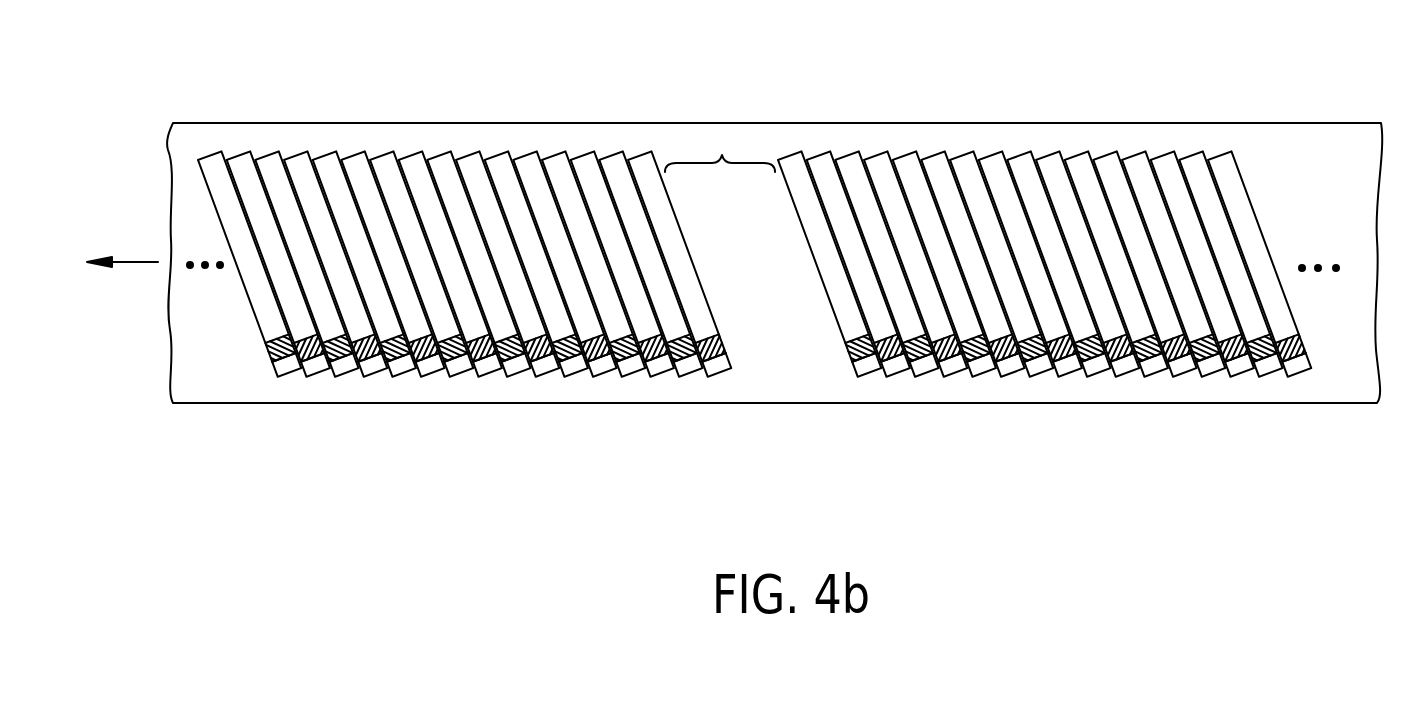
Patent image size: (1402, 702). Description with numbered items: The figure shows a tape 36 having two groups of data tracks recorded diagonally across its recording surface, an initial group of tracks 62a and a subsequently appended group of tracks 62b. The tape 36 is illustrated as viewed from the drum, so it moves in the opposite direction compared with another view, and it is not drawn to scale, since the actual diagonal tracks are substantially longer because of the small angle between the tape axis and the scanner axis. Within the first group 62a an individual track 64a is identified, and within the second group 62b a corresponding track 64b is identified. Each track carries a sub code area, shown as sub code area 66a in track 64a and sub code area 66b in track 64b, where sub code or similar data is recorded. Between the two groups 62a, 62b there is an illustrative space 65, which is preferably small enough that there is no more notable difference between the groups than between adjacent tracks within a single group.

The tape 36 is at (772, 403).
The group of tracks 62a is at (205, 110).
The group of tracks 62b is at (1255, 110).
The track 64a is at (680, 255).
The track 64b is at (1253, 222).
The space 65 is at (720, 148).
The sub code area 66a is at (707, 340).
The sub code area 66b is at (1290, 343).